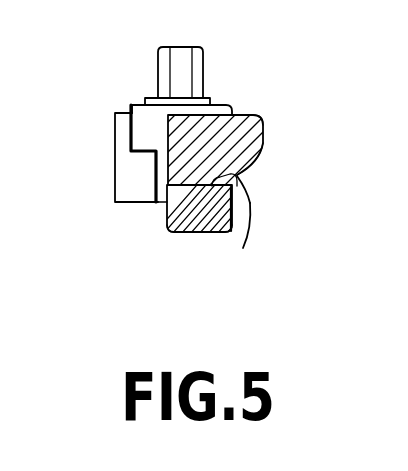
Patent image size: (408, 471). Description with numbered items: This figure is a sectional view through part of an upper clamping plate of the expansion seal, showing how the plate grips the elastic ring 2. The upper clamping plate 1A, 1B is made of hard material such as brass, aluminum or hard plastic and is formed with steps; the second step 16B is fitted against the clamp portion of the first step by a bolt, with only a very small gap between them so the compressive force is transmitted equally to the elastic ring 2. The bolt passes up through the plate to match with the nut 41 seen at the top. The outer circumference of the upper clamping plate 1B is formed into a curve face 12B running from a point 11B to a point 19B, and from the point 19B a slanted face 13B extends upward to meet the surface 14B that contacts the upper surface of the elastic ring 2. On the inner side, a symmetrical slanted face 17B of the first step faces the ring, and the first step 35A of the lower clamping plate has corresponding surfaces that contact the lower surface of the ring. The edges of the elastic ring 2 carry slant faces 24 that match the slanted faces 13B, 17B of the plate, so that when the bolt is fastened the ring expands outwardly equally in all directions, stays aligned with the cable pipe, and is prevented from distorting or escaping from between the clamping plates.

The nut 41 is at (179, 52).
The second step 16B is at (137, 102).
The upper clamping plate 1A is at (115, 136).
The first step 35A is at (134, 180).
The slanted face 17B is at (166, 196).
The upper clamping plate 1B is at (238, 112).
The point 11B is at (264, 123).
The curve face 12B is at (262, 150).
The surface 14B is at (238, 176).
The slanted face 13B is at (243, 194).
The point 19B is at (251, 215).
The elastic ring 2 is at (193, 233).
The slant faces 24 is at (168, 230).